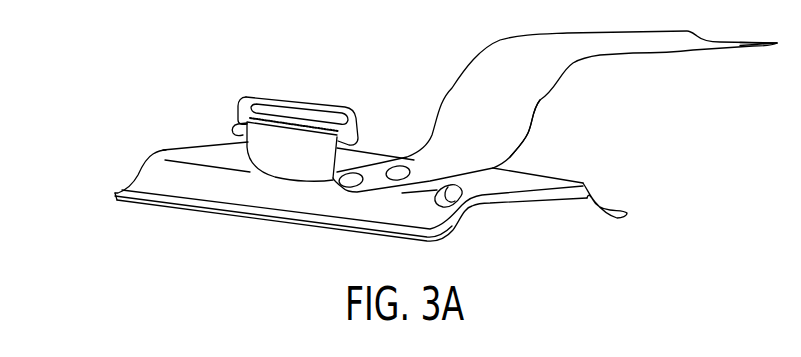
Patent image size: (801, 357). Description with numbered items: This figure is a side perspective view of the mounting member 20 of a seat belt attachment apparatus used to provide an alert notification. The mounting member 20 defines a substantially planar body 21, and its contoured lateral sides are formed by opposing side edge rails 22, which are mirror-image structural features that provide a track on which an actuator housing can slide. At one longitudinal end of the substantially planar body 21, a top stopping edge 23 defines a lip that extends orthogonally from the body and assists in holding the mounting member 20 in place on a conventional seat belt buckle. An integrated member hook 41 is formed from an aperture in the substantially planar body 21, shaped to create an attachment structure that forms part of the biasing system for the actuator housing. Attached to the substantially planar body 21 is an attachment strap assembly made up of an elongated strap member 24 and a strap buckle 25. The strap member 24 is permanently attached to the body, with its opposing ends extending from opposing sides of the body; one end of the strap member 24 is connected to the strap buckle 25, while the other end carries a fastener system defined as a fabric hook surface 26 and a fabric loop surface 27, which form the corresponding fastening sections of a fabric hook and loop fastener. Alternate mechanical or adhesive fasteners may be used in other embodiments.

The mounting member 20 is at (195, 70).
The substantially planar body 21 is at (380, 210).
The side edge rails 22 is at (115, 193).
The top stopping edge 23 is at (598, 193).
The elongated strap member 24 is at (600, 48).
The strap buckle 25 is at (237, 127).
The fabric hook surface 26 is at (752, 44).
The fabric loop surface 27 is at (530, 140).
The integrated member hook 41 is at (454, 198).